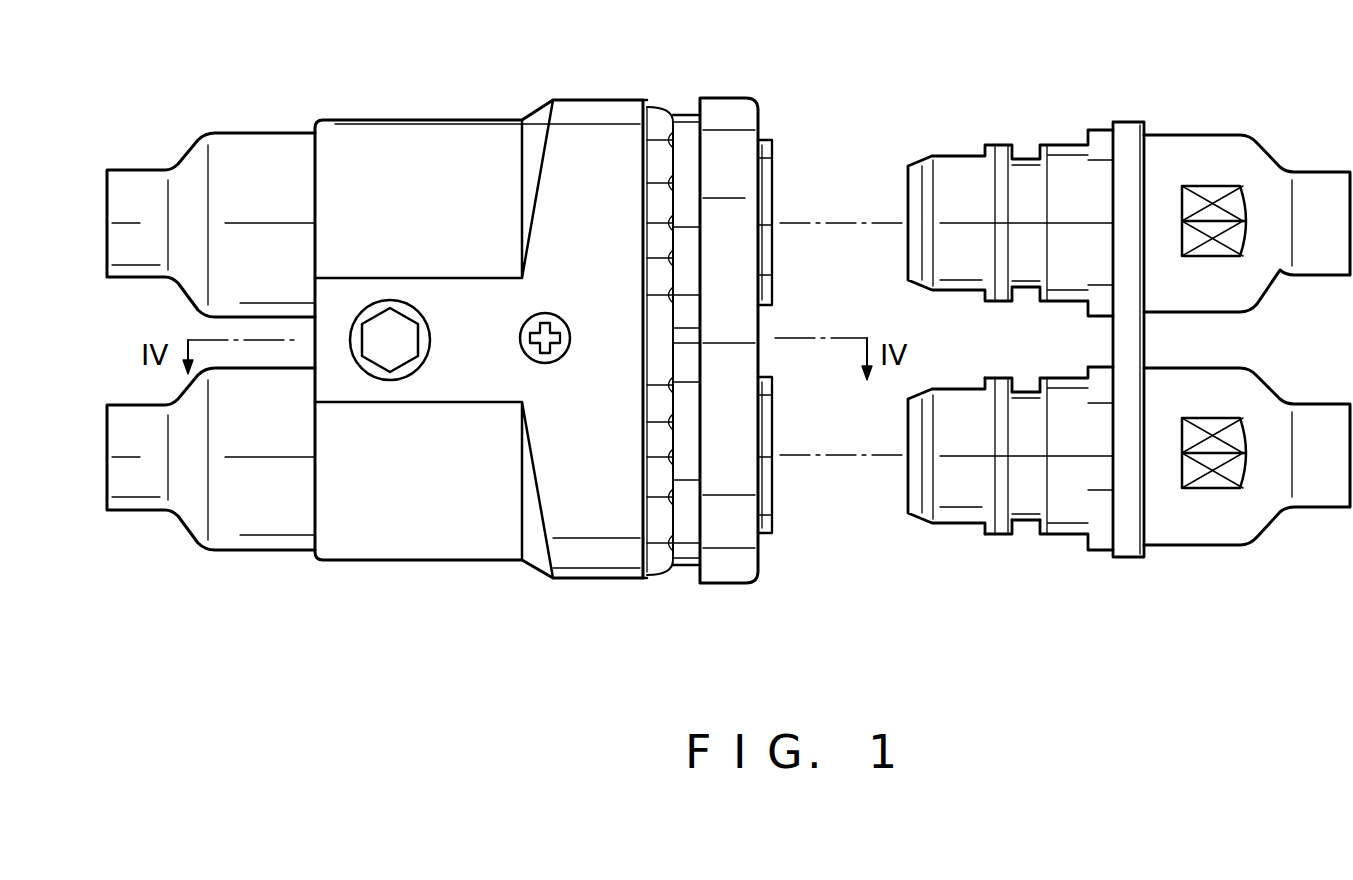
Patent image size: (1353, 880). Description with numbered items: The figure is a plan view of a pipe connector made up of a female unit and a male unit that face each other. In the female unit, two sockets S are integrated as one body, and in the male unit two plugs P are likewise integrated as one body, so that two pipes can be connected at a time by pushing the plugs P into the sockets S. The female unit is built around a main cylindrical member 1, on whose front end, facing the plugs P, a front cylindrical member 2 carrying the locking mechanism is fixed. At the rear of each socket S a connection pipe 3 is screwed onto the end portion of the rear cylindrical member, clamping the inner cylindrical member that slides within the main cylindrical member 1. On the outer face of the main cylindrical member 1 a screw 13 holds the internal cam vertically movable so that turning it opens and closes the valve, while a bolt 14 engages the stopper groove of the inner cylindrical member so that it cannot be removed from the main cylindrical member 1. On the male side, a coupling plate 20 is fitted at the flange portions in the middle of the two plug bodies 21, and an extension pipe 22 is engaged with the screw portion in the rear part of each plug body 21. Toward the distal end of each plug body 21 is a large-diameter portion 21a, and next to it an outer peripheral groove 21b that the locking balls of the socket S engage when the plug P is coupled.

The main cylindrical member 1 is at (418, 128).
The front cylindrical member 2 is at (687, 555).
The connection pipe 3 is at (253, 532).
The screw 13 is at (403, 330).
The bolt 14 is at (556, 316).
The coupling plate 20 is at (1128, 120).
The plug body 21 is at (958, 170).
The large-diameter portion 21a is at (996, 537).
The outer peripheral groove 21b is at (1025, 537).
The extension pipe 22 is at (1253, 155).
The socket S is at (791, 135).
The plug P is at (1118, 325).